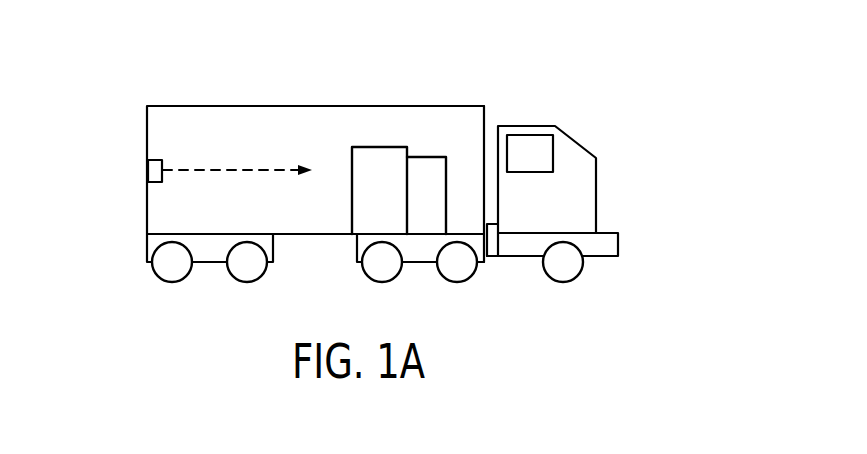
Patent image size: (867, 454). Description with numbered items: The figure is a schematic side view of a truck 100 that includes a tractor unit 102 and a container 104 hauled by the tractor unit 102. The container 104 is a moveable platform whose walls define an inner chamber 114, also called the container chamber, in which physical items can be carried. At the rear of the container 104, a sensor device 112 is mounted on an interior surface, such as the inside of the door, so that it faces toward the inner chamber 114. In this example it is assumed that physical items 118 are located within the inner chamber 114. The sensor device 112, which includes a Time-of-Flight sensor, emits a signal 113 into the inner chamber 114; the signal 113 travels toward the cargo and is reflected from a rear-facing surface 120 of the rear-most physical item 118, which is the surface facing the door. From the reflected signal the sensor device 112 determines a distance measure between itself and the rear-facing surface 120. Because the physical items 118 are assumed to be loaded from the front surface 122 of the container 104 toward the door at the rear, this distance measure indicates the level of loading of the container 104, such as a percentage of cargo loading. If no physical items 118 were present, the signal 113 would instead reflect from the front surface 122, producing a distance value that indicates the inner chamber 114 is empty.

The truck 100 is at (662, 147).
The tractor unit 102 is at (527, 126).
The container 104 is at (294, 106).
The sensor device 112 is at (148, 172).
The emitted signal 113 is at (232, 170).
The inner chamber 114 is at (334, 147).
The physical items 118 is at (382, 147).
The rear-facing surface 120 is at (350, 205).
The front surface 122 is at (483, 130).